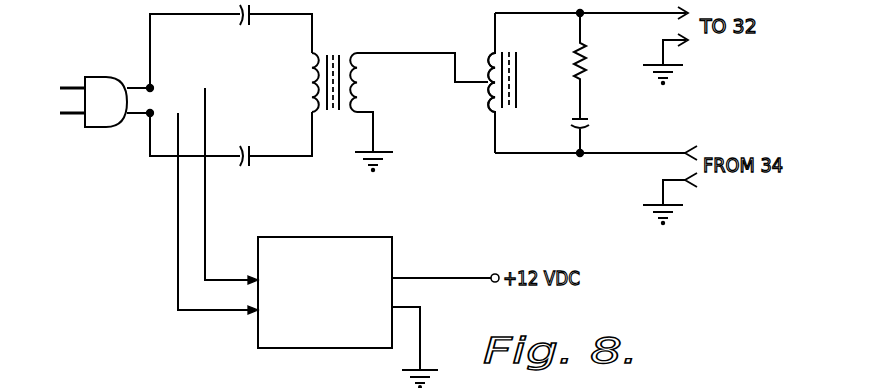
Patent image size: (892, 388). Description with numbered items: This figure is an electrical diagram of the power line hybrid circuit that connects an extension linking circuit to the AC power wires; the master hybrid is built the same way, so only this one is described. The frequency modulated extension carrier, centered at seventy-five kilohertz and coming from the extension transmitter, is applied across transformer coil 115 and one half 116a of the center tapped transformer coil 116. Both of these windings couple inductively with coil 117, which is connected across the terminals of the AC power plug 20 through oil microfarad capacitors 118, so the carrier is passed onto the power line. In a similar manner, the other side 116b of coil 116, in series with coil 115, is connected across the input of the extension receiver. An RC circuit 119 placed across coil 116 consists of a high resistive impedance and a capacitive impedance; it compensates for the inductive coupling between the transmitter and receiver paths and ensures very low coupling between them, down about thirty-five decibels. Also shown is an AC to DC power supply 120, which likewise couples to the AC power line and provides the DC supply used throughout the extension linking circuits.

The AC power plug 20 is at (107, 128).
The oil microfarad capacitors 118 is at (243, 27).
The transformer coil 117 is at (307, 82).
The transformer coil 115 is at (358, 97).
The center tapped transformer coil 116 is at (481, 88).
The one half of center tapped transformer coil 116a is at (486, 110).
The other side of center tapped transformer coil 116b is at (489, 59).
The RC circuit 119 is at (592, 95).
The AC to DC power supply 120 is at (298, 350).